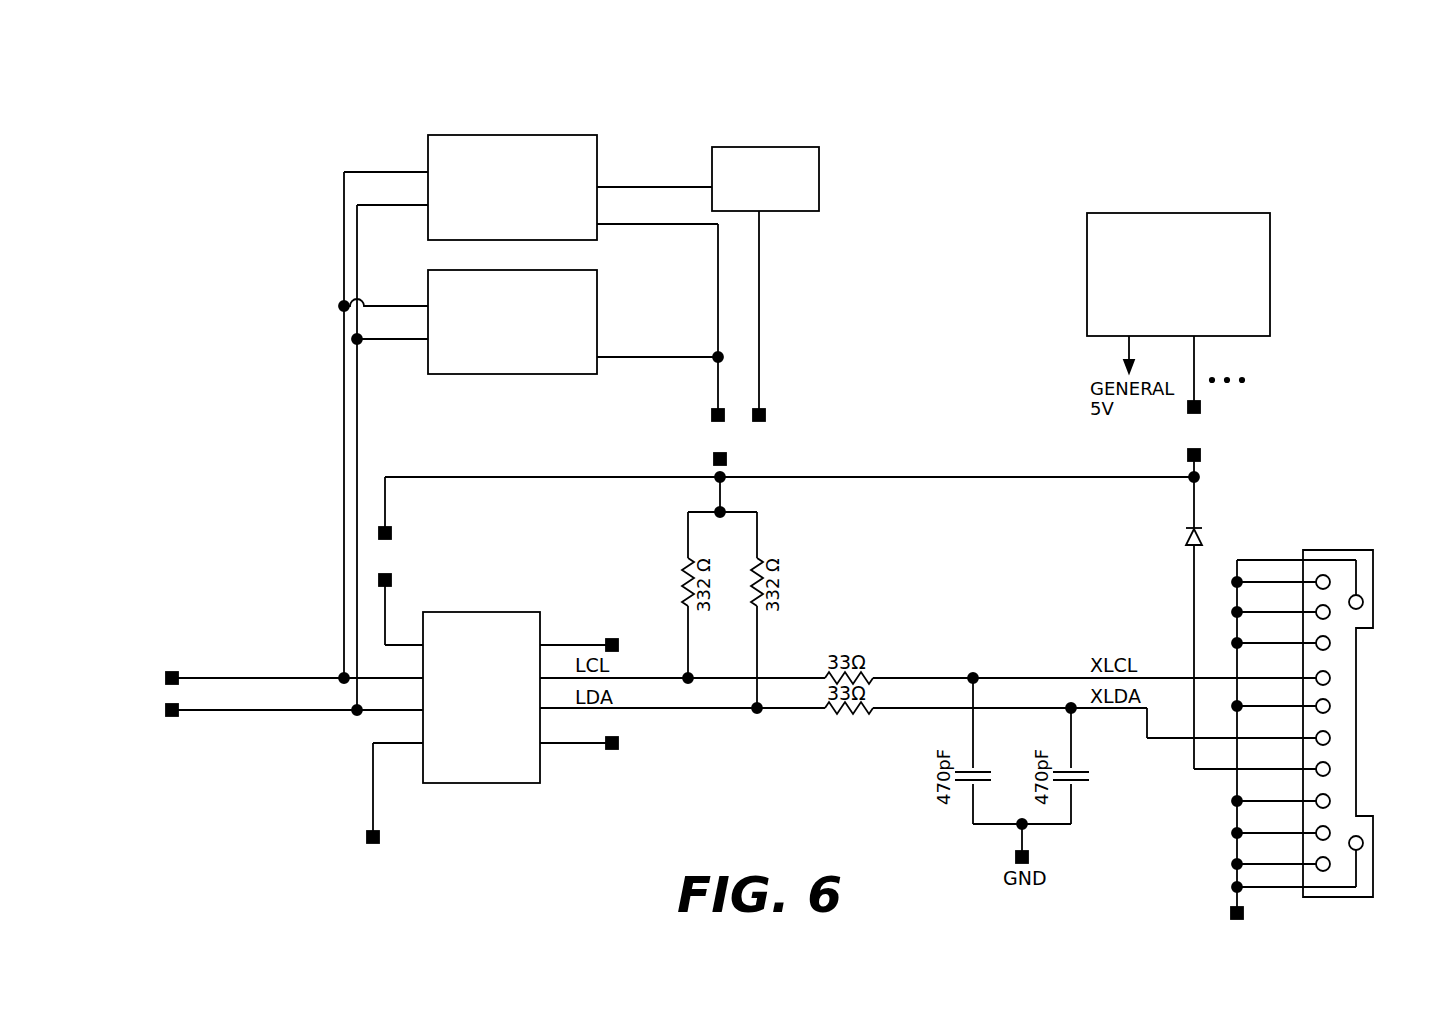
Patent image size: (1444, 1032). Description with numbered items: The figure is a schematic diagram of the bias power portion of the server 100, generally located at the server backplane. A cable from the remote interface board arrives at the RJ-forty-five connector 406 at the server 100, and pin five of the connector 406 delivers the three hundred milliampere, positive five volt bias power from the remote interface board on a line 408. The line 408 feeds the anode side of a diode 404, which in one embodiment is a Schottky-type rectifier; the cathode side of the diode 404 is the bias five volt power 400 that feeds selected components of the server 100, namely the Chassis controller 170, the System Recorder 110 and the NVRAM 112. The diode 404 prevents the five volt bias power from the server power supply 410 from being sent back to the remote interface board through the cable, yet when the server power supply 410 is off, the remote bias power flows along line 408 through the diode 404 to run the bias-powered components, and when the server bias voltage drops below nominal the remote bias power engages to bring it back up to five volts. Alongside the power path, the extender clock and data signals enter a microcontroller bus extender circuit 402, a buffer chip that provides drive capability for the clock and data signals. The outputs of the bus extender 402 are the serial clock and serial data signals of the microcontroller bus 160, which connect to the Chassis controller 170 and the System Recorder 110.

The server 100 is at (1181, 141).
The System Recorder 110 is at (597, 158).
The NVRAM 112 is at (819, 180).
The Chassis controller 170 is at (597, 306).
The microcontroller bus 160 is at (172, 652).
The BIAS 5V power 400 is at (829, 493).
The microcontroller bus extender circuit 402 is at (478, 612).
The diode 404 is at (1190, 532).
The RJ-45 connector 406 is at (1373, 582).
The line 408 is at (1213, 773).
The server power supply 410 is at (1270, 265).